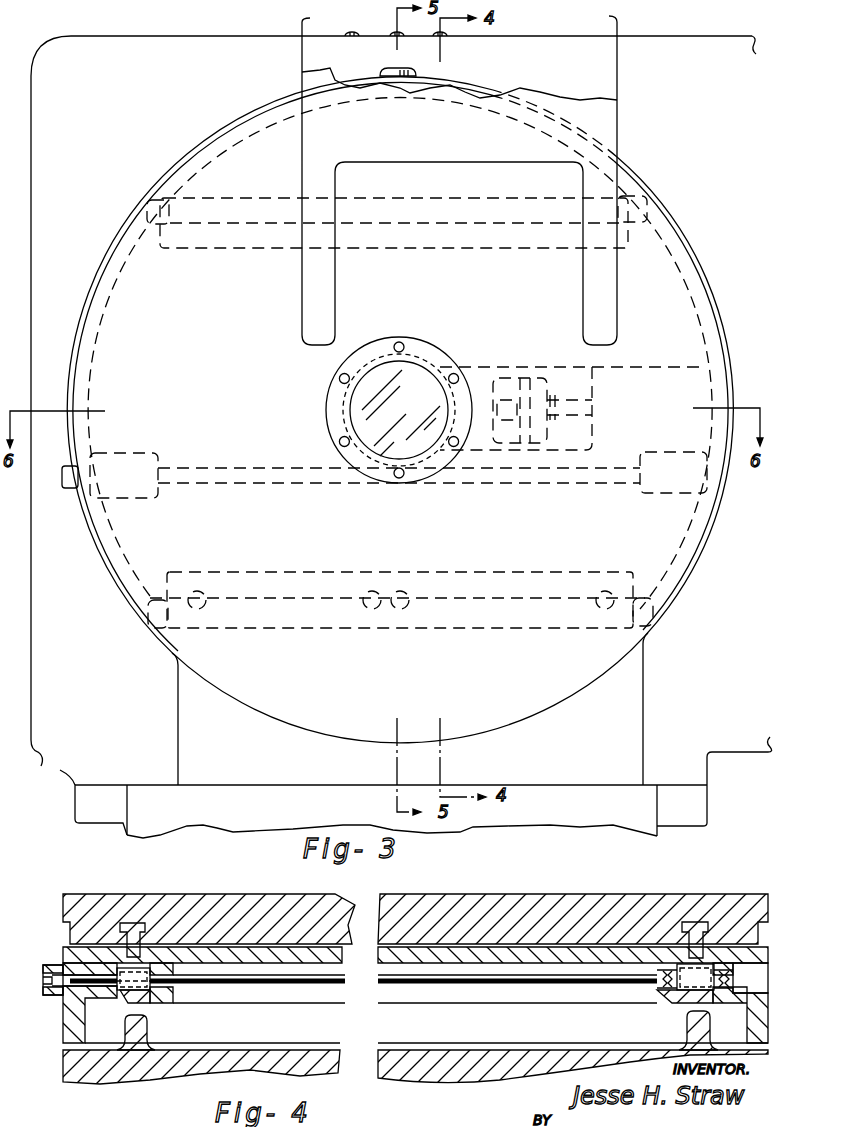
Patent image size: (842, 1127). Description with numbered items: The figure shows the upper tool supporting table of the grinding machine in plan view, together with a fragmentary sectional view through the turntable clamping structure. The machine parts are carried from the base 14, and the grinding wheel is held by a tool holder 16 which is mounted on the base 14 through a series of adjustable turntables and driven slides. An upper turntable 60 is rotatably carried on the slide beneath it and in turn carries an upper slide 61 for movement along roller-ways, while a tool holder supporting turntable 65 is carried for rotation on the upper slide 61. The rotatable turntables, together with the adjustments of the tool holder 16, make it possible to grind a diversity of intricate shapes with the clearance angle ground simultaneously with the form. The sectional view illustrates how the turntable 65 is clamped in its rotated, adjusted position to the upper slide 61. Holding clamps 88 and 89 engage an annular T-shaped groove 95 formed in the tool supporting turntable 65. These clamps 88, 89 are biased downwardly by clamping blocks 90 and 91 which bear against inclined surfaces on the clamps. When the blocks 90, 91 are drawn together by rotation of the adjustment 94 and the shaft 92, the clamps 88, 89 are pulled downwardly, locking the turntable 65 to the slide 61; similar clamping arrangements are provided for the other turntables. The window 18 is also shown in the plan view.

In FIG. 3, the base 14 is at (387, 437).
In FIG. 3, the tool holder 16 is at (608, 120).
In FIG. 3, the window 18 is at (412, 362).
In FIG. 3, the tool holder supporting turntable 65 is at (680, 305).
In FIG. 4, the tool holder supporting turntable 65 is at (462, 902).
In FIG. 4, the upper turntable 60 is at (68, 1068).
In FIG. 4, the upper slide 61 is at (62, 1027).
In FIG. 4, the holding clamp 88 is at (128, 925).
In FIG. 4, the holding clamp 89 is at (700, 925).
In FIG. 4, the clamping block 90 is at (140, 992).
In FIG. 4, the clamping block 91 is at (662, 990).
In FIG. 4, the shaft 92 is at (410, 985).
In FIG. 4, the adjustment 94 is at (48, 968).
In FIG. 4, the annular T-shaped groove 95 is at (170, 905).